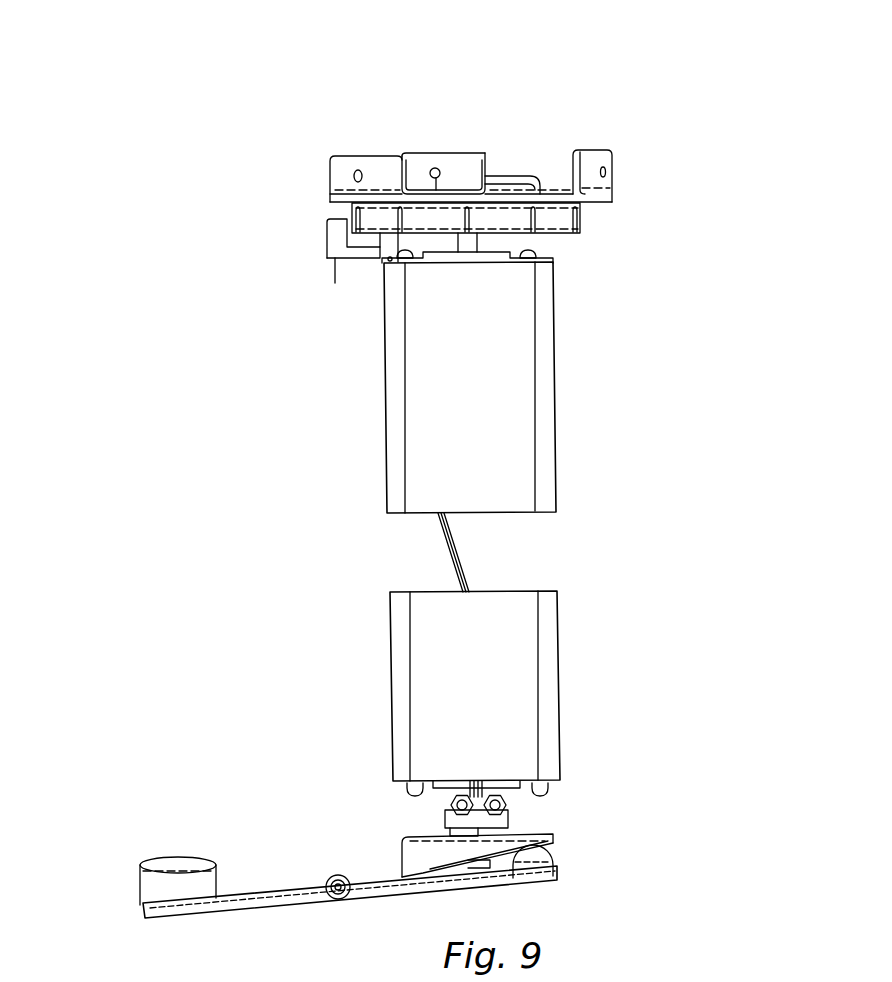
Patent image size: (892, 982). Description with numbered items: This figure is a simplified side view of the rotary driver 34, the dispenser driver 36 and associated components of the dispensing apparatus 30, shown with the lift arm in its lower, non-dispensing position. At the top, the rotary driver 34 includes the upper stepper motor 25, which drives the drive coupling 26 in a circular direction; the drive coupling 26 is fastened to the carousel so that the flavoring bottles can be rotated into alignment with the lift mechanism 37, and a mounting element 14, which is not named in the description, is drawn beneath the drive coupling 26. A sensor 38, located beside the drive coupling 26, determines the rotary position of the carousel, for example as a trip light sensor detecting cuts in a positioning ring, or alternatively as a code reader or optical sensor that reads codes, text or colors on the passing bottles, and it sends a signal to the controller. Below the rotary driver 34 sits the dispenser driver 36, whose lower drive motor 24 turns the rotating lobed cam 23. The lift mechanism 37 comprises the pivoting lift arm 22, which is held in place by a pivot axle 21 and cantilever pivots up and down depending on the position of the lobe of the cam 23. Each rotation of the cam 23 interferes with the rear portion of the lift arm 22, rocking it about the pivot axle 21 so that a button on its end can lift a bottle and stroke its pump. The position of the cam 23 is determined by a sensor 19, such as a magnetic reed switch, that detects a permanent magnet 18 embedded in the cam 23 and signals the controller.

The dispensing apparatus 30 is at (549, 110).
The drive coupling 26 is at (595, 180).
The mounting plate 14 is at (548, 220).
The sensor 38 is at (327, 237).
The upper stepper motor 25 is at (493, 403).
The rotary driver 34 is at (469, 373).
The lower drive motor 24 is at (515, 700).
The dispenser driver 36 is at (475, 703).
The sensor 19 is at (477, 820).
The lift mechanism 37 is at (585, 891).
The lift arm 22 is at (195, 850).
The pivot axle 21 is at (338, 895).
The permanent magnet 18 is at (408, 848).
The rotating lobed cam 23 is at (412, 858).